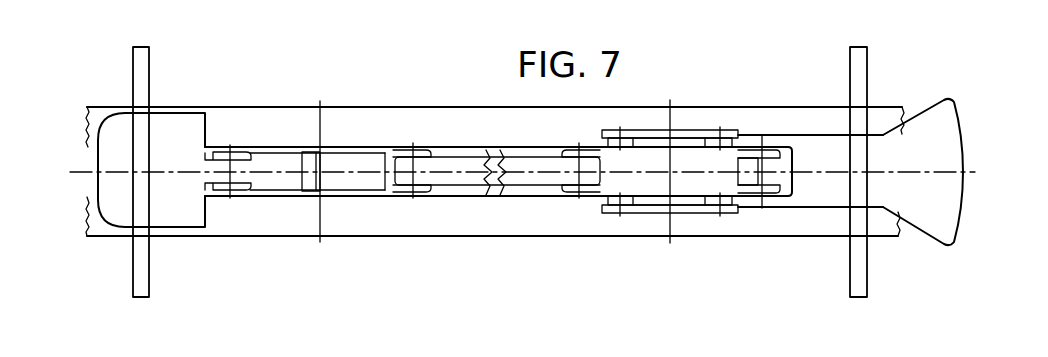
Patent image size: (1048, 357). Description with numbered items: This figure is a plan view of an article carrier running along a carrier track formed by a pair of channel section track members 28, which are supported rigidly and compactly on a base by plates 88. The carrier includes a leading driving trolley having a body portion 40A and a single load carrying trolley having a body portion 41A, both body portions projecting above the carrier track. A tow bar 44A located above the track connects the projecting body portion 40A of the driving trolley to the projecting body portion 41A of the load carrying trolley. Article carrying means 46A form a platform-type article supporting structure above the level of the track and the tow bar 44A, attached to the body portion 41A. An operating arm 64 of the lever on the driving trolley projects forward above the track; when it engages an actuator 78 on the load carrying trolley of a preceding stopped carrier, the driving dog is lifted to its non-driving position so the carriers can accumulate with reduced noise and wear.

The channel section track members 28 is at (353, 106).
The plates 88 is at (149, 63).
The operating arm 64 is at (170, 161).
The body portion 40A is at (287, 194).
The tow bar 44A is at (538, 186).
The body portion 41A is at (598, 196).
The article carrying means 46A is at (696, 218).
The actuator 78 is at (963, 143).